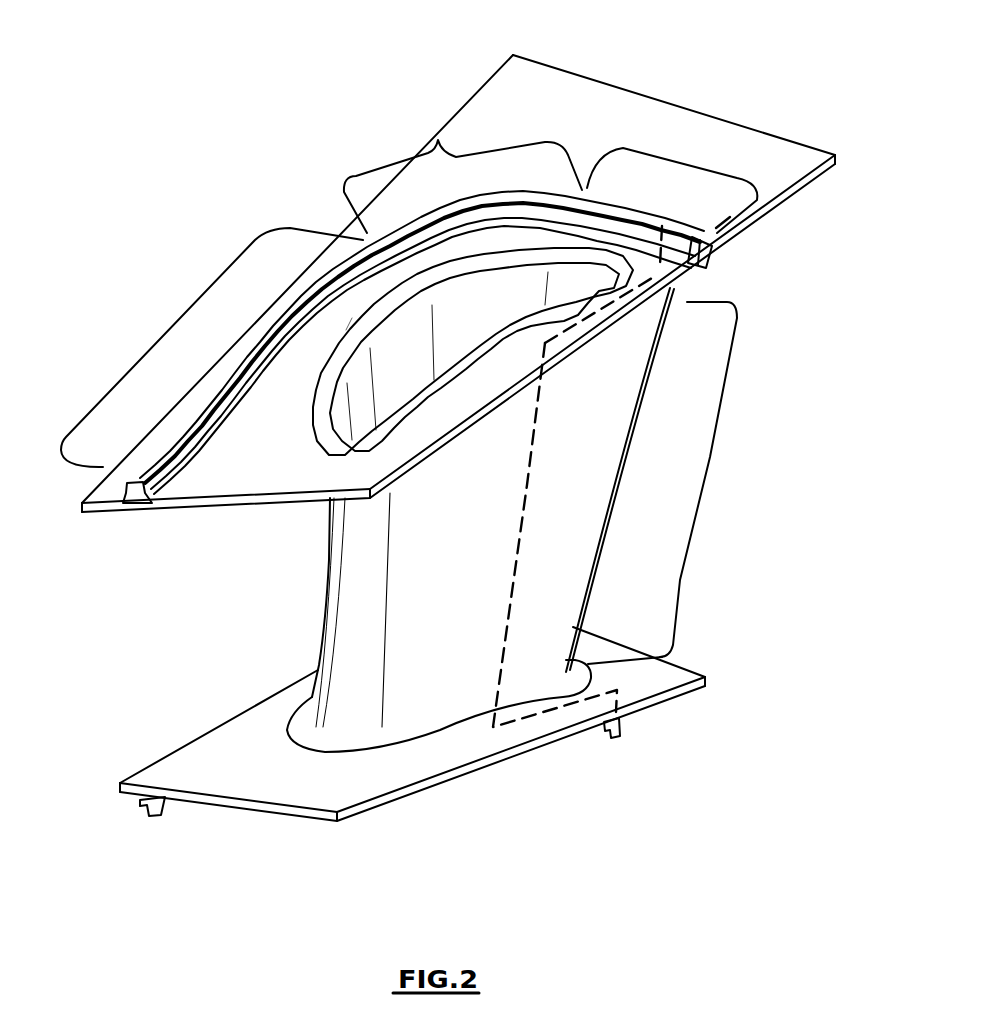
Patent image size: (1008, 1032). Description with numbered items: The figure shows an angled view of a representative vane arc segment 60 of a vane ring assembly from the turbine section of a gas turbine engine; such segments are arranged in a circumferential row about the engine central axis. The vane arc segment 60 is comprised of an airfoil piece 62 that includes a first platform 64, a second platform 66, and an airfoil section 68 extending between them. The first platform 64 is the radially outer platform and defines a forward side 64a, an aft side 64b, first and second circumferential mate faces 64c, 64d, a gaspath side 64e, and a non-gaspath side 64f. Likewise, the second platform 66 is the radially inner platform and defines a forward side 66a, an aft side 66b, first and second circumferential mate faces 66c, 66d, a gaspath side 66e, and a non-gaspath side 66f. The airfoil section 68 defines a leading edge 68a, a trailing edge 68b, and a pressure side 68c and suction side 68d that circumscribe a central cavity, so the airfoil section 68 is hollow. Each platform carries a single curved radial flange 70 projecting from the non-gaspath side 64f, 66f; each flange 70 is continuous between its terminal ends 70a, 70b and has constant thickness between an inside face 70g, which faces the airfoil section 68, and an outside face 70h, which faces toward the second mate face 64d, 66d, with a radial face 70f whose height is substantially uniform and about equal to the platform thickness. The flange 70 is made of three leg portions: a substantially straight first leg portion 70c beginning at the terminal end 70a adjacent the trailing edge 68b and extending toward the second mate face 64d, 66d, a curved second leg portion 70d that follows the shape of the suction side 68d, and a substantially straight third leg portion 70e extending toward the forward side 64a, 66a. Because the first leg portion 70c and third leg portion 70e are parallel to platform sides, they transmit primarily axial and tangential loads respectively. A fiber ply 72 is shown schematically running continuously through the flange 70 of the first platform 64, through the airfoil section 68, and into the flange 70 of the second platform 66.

The vane arc segment 60 is at (142, 630).
The airfoil piece 62 is at (580, 603).
The first platform 64 is at (772, 206).
The forward side 64a is at (220, 498).
The aft side 64b is at (677, 104).
The first circumferential mate face 64c is at (818, 177).
The second circumferential mate face 64d is at (453, 120).
The gaspath side 64e is at (285, 503).
The non-gaspath side 64f is at (541, 88).
The second platform 66 is at (658, 679).
The forward side 66a is at (302, 814).
The aft side 66b is at (682, 661).
The first circumferential mate face 66c is at (399, 794).
The second circumferential mate face 66d is at (185, 741).
The gaspath side 66e is at (250, 792).
The non-gaspath side 66f is at (497, 762).
The airfoil section 68 is at (706, 488).
The leading edge 68a is at (340, 632).
The trailing edge 68b is at (600, 513).
The pressure side 68c is at (588, 447).
The suction side 68d is at (352, 318).
The curved radial flange 70 is at (204, 412).
The terminal end 70a is at (713, 247).
The terminal end 70b is at (124, 497).
The first leg portion 70c is at (687, 165).
The second leg portion 70d is at (430, 138).
The third leg portion 70e is at (157, 337).
The radial face 70f is at (548, 200).
The inside face 70g is at (180, 460).
The outside face 70h is at (179, 437).
The fiber ply 72 is at (528, 510).